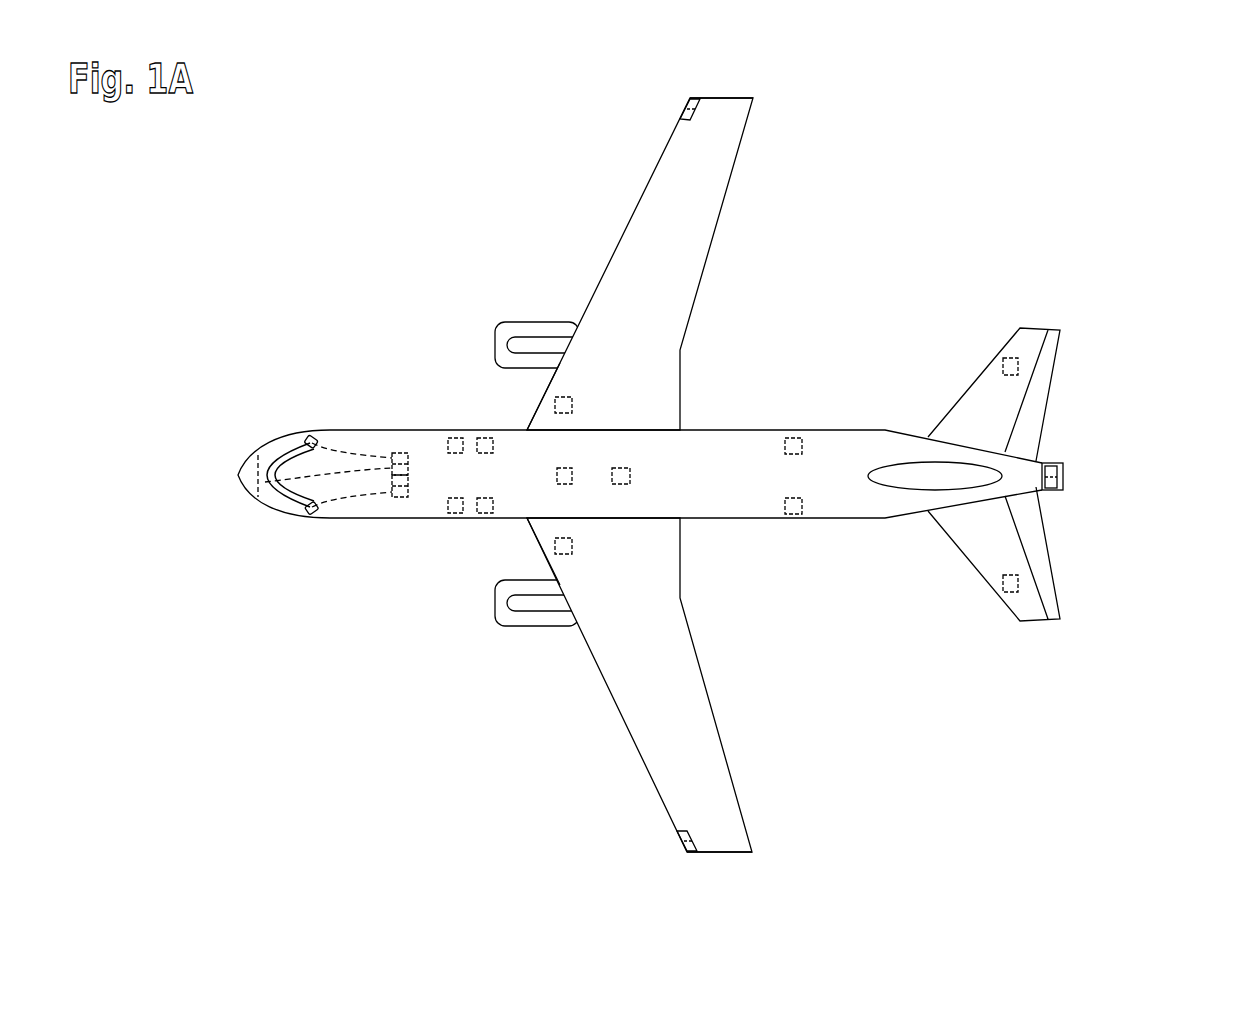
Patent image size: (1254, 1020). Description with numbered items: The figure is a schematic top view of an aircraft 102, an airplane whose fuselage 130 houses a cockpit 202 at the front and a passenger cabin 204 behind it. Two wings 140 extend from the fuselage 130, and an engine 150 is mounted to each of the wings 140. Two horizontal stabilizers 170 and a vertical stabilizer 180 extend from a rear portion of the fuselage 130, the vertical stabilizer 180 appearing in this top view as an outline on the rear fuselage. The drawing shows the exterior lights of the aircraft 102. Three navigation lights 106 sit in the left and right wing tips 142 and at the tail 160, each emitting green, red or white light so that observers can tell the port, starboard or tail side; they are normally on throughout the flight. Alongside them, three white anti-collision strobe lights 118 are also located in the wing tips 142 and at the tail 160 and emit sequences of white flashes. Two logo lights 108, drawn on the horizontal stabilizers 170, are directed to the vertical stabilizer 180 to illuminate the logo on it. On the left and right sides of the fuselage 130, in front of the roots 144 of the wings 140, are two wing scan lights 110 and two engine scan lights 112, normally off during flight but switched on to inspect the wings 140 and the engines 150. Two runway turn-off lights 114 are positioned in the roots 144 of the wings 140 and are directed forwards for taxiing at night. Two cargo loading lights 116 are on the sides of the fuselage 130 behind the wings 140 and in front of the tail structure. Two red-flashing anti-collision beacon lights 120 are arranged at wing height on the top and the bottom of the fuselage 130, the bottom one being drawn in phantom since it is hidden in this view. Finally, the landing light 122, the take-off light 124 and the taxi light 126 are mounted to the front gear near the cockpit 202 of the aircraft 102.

The aircraft 102 is at (970, 225).
The navigation lights 106 is at (688, 102).
The logo lights 108 is at (1003, 366).
The wing scan lights 110 is at (448, 446).
The engine scan lights 112 is at (482, 442).
The runway turn-off lights 114 is at (572, 406).
The cargo loading lights 116 is at (793, 438).
The white anti-collision strobe lights 118 is at (683, 117).
The red-flashing anti-collision beacon lights 120 is at (565, 468).
The landing light 122 is at (354, 498).
The take-off light 124 is at (354, 452).
The taxi light 126 is at (258, 478).
The fuselage 130 is at (860, 503).
The wings 140 is at (735, 199).
The wing tips 142 is at (735, 92).
The roots 144 is at (527, 405).
The engine 150 is at (523, 315).
The tail 160 is at (1072, 447).
The horizontal stabilizers 170 is at (1070, 343).
The vertical stabilizer 180 is at (897, 475).
The cockpit 202 is at (277, 442).
The passenger cabin 204 is at (752, 458).